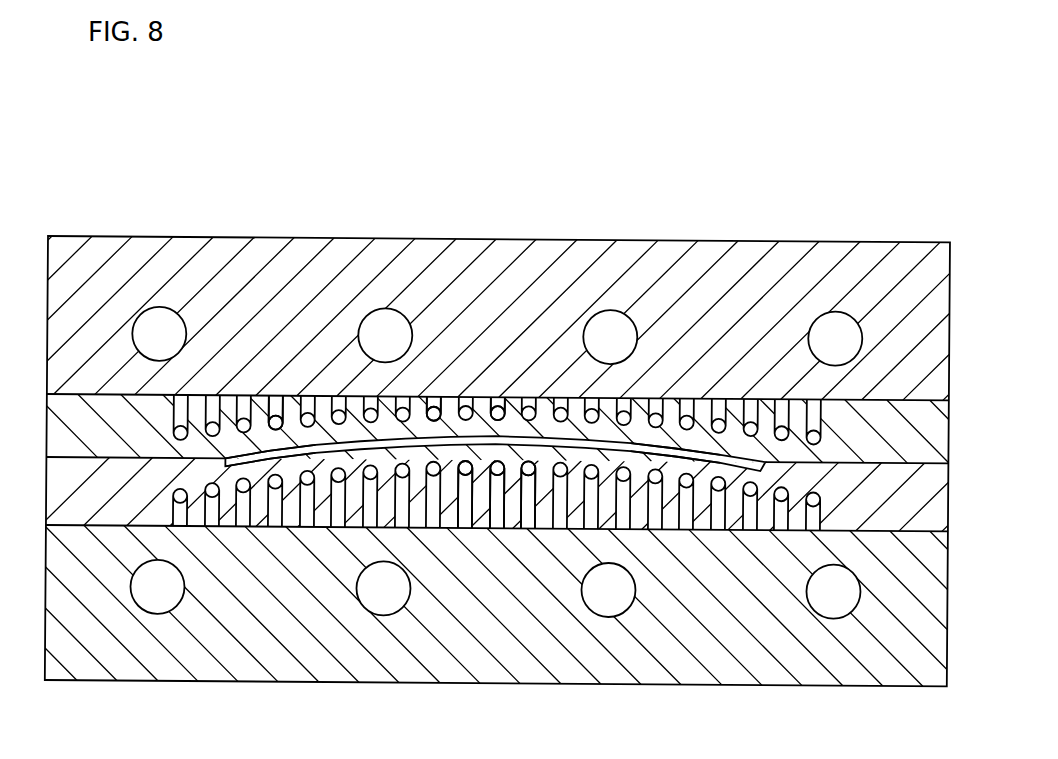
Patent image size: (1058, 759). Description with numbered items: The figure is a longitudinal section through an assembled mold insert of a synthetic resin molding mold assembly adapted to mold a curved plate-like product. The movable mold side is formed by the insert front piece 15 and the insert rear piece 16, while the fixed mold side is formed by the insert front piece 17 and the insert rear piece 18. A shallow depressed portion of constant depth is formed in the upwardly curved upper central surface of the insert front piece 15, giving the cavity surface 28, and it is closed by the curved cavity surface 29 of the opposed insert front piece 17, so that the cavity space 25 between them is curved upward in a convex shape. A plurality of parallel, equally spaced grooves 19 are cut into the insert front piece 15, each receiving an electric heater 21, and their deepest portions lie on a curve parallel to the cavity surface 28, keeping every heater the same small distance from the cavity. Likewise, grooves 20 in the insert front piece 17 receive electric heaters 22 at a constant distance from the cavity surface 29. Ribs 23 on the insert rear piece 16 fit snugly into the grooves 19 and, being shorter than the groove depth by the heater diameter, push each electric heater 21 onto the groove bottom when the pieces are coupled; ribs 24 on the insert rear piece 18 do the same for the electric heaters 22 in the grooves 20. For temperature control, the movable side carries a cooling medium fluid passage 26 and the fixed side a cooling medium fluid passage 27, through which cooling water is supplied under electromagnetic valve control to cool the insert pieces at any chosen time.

The insert front piece of the movable mold piece 15 is at (106, 513).
The insert rear piece of the movable mold piece 16 is at (245, 669).
The insert front piece of the fixed mold piece 17 is at (100, 405).
The insert rear piece of the fixed mold piece 18 is at (383, 259).
The groove 19 is at (466, 475).
The groove 20 is at (437, 402).
The electric heater 21 is at (510, 477).
The electric heater 22 is at (503, 401).
The rib 23 is at (540, 486).
The rib 24 is at (279, 398).
The cavity space 25 is at (652, 441).
The cooling medium fluid passage 26 is at (623, 608).
The cooling medium fluid passage 27 is at (612, 313).
The cavity surface 28 is at (290, 456).
The cavity surface 29 is at (361, 437).